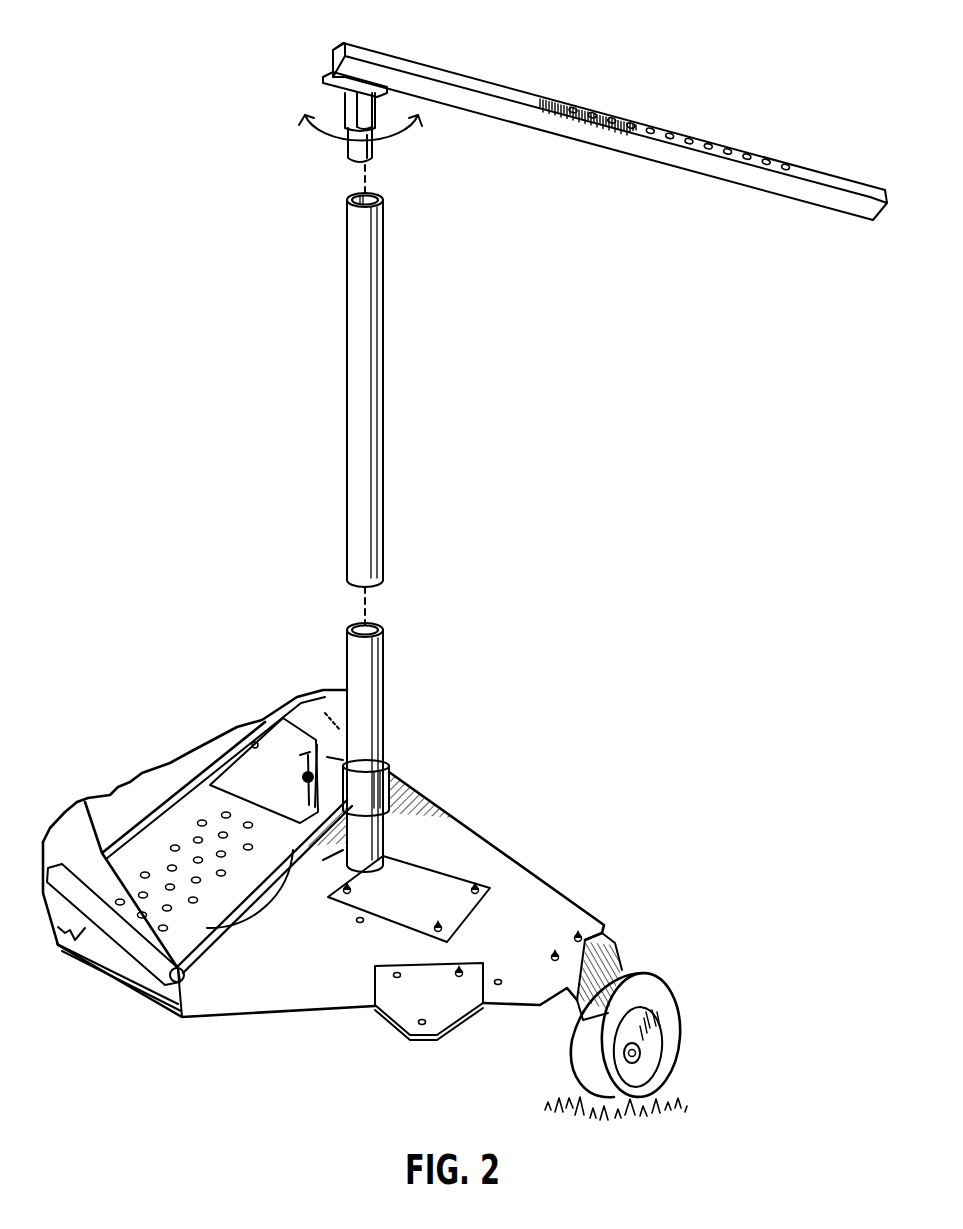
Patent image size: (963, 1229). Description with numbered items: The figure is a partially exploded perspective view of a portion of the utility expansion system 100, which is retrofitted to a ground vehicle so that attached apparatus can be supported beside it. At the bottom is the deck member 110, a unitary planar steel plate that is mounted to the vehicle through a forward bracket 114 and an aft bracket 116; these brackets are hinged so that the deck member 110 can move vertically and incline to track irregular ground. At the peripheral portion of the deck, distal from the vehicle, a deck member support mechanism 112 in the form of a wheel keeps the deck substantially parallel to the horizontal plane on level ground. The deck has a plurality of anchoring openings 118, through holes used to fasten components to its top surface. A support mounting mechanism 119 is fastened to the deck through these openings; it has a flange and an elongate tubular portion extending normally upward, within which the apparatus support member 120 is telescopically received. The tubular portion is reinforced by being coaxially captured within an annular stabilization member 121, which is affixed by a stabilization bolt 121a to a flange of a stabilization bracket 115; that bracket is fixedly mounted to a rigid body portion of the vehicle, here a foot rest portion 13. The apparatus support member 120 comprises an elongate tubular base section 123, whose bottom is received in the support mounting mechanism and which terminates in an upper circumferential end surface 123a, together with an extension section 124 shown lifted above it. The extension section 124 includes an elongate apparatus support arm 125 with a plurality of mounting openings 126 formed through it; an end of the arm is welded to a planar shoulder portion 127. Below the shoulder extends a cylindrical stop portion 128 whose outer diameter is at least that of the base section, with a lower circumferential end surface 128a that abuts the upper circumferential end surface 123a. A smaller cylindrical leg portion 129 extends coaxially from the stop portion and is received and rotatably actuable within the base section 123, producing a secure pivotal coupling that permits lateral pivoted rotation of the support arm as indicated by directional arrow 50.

The foot rest portion 13 is at (185, 803).
The directional arrow 50 is at (305, 126).
The utility expansion system 100 is at (528, 749).
The deck member 110 is at (508, 855).
The deck member support mechanism 112 is at (647, 980).
The forward bracket 114 is at (310, 713).
The stabilization bracket 115 is at (267, 733).
The aft bracket 116 is at (177, 1017).
The anchoring openings 118 is at (397, 975).
The support mounting mechanism 119 is at (380, 657).
The apparatus support member 120 is at (373, 540).
The annular stabilization member 121 is at (385, 778).
The stabilization bolt 121a is at (352, 743).
The tubular base section 123 is at (375, 370).
The upper circumferential end surface 123a is at (383, 200).
The extension section 124 is at (437, 72).
The apparatus support arm 125 is at (530, 95).
The mounting openings 126 is at (661, 130).
The planar shoulder portion 127 is at (330, 75).
The cylindrical stop portion 128 is at (343, 47).
The lower circumferential end surface 128a is at (373, 90).
The cylindrical leg portion 129 is at (378, 158).